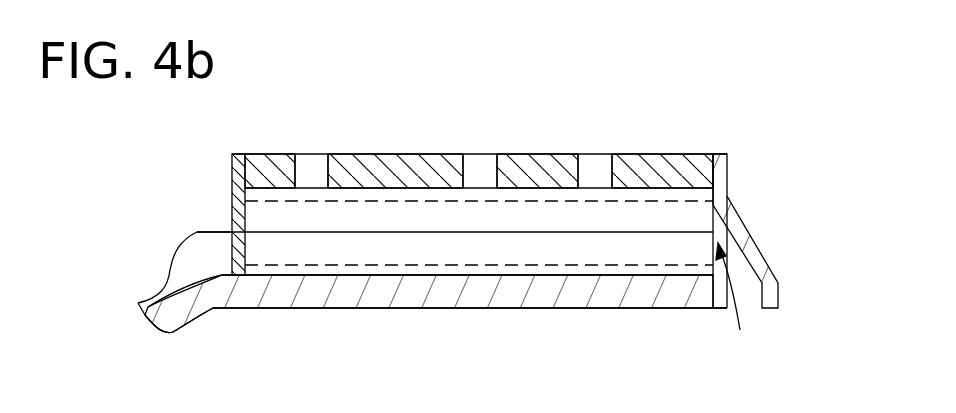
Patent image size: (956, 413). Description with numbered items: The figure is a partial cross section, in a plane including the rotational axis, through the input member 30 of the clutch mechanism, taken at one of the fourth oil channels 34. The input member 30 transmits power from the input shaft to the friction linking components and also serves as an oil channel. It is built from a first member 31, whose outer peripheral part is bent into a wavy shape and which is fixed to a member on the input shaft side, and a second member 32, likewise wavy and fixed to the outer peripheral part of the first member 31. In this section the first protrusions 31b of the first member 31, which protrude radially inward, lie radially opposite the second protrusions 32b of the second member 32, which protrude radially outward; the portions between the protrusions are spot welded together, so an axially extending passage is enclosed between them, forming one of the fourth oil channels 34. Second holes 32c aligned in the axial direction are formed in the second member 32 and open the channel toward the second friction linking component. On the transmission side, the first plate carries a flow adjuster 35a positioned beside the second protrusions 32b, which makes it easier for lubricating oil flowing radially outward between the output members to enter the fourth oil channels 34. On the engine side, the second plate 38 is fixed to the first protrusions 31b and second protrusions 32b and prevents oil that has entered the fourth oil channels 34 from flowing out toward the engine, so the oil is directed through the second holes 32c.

The input member 30 is at (750, 110).
The first member 31 is at (498, 322).
The first protrusions 31b is at (590, 298).
The second member 32 is at (688, 148).
The second protrusions 32b is at (382, 155).
The second holes 32c is at (338, 223).
The fourth oil channels 34 is at (422, 247).
The flow adjuster 35a is at (740, 222).
The second plate 38 is at (237, 203).